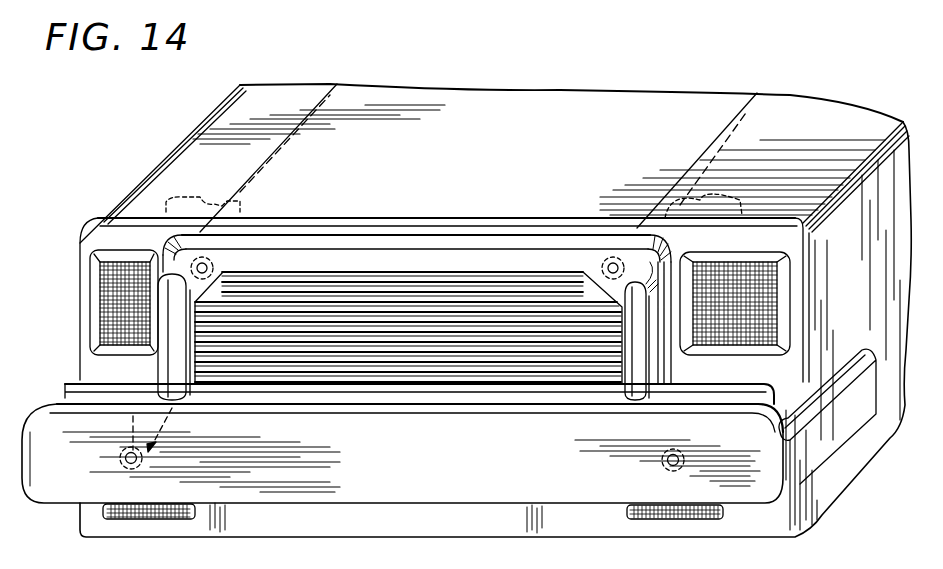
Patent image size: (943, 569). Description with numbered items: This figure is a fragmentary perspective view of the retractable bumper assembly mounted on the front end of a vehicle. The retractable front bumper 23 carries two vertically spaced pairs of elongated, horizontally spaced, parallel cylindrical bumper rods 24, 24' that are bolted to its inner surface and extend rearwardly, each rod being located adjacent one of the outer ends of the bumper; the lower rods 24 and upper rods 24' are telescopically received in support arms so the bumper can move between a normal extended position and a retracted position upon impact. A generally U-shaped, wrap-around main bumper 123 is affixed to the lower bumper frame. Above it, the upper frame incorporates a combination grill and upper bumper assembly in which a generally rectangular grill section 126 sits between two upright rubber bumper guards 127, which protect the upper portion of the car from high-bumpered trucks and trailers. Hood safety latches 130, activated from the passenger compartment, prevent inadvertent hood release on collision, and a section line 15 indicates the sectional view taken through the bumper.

The section line of FIG. 15 is at (202, 187).
The retractable front bumper 23 is at (362, 234).
The bumper rod 24 is at (422, 449).
The bumper rod 24' is at (407, 226).
The main bumper 123 is at (54, 504).
The grill section 126 is at (427, 322).
The bumper guard 127 is at (158, 366).
The hood safety latch 130 is at (180, 205).